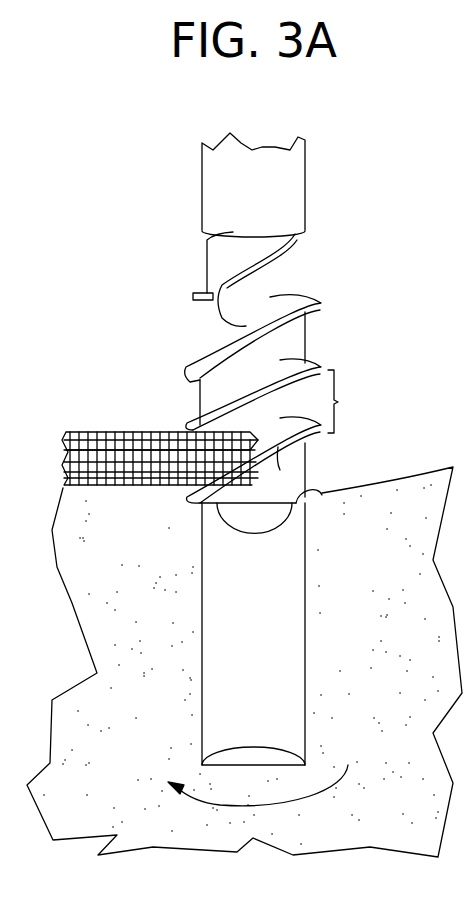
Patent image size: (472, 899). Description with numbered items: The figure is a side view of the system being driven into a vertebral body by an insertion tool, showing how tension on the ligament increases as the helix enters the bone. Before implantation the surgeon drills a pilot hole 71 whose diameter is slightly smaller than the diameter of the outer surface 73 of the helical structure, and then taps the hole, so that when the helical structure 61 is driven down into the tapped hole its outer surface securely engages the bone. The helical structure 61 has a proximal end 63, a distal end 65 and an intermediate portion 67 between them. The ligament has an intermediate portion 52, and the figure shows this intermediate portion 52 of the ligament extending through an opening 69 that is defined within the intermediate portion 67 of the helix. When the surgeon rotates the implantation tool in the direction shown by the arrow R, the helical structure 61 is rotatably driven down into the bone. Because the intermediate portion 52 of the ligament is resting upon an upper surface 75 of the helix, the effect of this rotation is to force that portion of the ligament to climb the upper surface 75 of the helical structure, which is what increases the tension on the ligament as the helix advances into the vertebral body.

The helical structure 61 is at (277, 346).
The proximal end 63 is at (193, 297).
The opening 69 is at (349, 401).
The outer surface 73 is at (320, 432).
The upper surface 75 is at (293, 440).
The intermediate portion 67 is at (282, 466).
The distal end 65 is at (322, 497).
The pilot hole 71 is at (285, 632).
The intermediate portion 52 is at (140, 478).
The arrow R is at (262, 772).